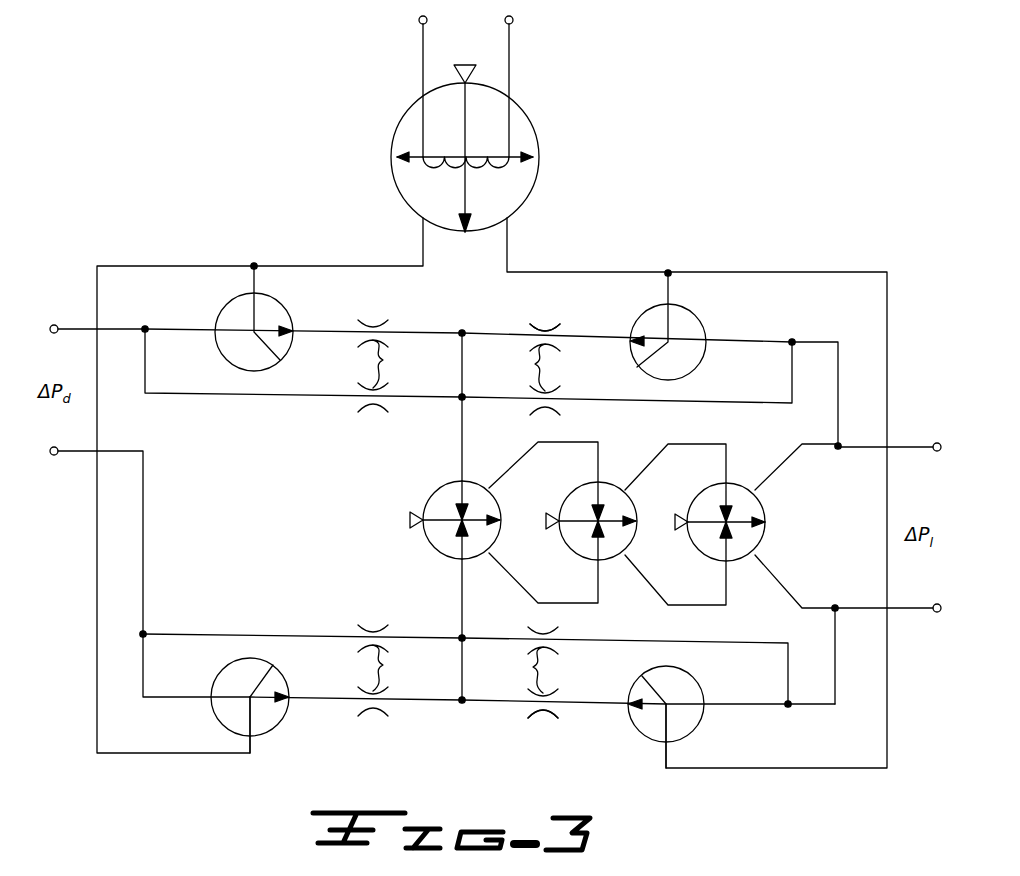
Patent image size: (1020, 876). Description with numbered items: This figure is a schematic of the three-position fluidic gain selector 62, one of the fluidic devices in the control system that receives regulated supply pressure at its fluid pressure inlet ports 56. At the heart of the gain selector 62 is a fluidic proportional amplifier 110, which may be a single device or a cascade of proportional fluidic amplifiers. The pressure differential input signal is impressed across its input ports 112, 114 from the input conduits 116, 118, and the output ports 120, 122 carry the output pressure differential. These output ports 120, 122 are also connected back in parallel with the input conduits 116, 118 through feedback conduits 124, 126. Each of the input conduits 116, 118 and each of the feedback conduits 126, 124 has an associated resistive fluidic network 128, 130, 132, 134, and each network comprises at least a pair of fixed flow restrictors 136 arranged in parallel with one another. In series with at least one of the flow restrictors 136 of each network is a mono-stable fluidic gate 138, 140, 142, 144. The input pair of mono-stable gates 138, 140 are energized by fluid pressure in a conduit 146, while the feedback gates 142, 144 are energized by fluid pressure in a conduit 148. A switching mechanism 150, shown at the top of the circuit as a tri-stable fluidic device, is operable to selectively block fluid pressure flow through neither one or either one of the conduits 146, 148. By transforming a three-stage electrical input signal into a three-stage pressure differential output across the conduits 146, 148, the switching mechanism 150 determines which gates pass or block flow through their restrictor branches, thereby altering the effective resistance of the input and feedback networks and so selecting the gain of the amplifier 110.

The fluid pressure inlet ports 56 is at (476, 42).
The gain selector 62 is at (795, 174).
The fluidic proportional amplifier 110 is at (395, 552).
The input port 112 is at (462, 463).
The input port 114 is at (462, 567).
The input conduit 116 is at (109, 329).
The input conduit 118 is at (109, 451).
The output port 120 is at (768, 480).
The output port 122 is at (765, 566).
The feedback conduit 124 is at (816, 342).
The feedback conduit 126 is at (817, 706).
The resistive fluidic network 128 is at (303, 412).
The resistive fluidic network 130 is at (308, 610).
The resistive fluidic network 132 is at (568, 310).
The resistive fluidic network 134 is at (550, 728).
The fixed flow restrictors 136 is at (383, 360).
The mono-stable fluidic gate 138 is at (284, 311).
The mono-stable fluidic gate 140 is at (275, 729).
The mono-stable fluidic gate 142 is at (695, 314).
The mono-stable fluidic gate 144 is at (692, 732).
The conduit 146 is at (379, 266).
The conduit 148 is at (540, 272).
The switching mechanism 150 is at (555, 94).